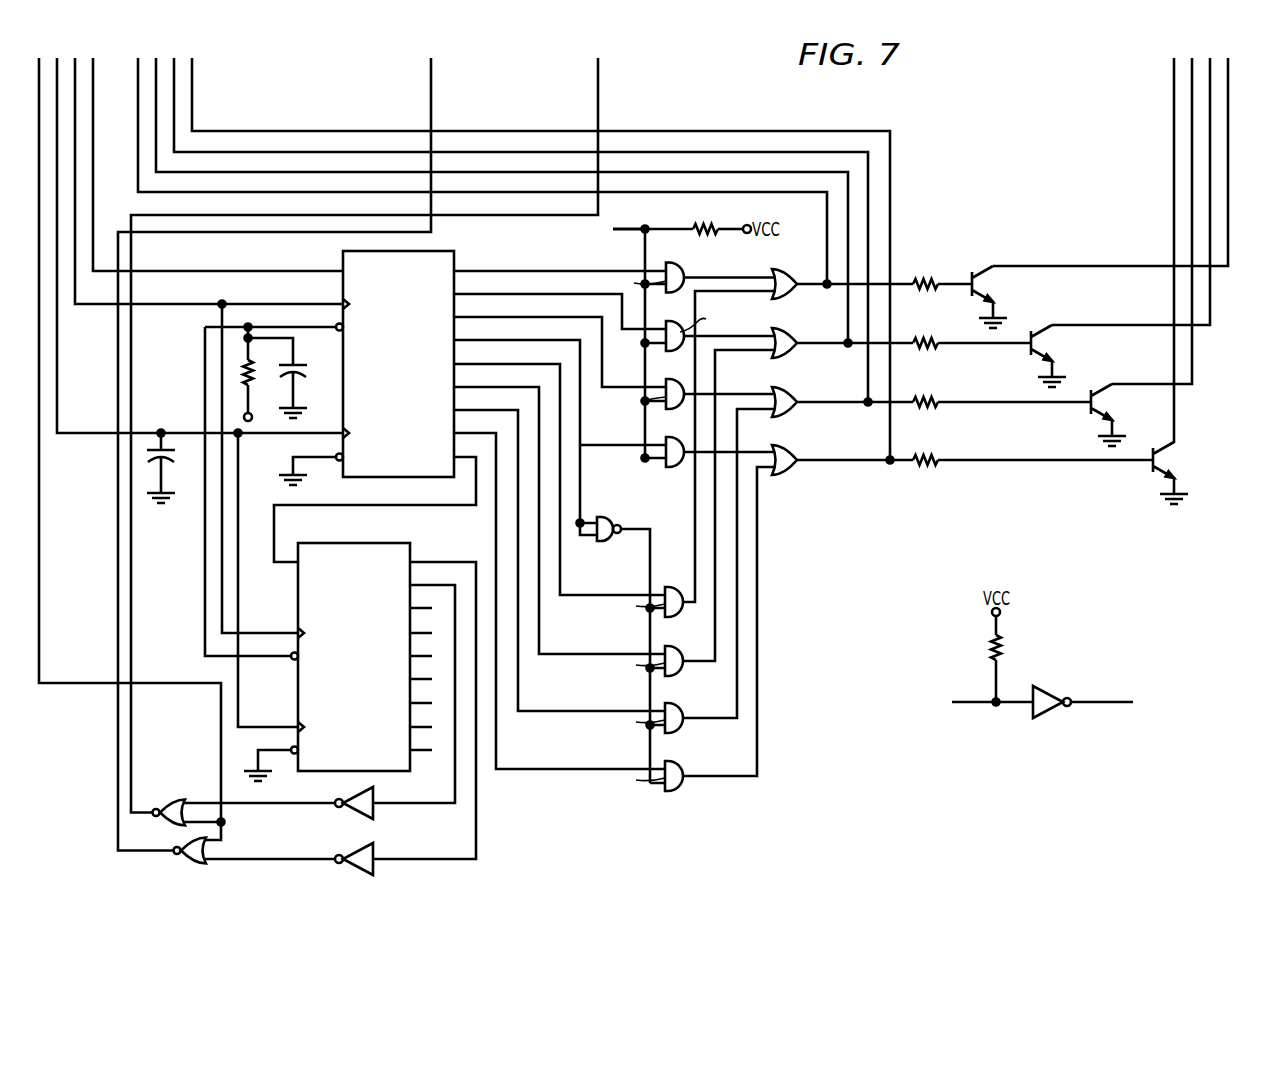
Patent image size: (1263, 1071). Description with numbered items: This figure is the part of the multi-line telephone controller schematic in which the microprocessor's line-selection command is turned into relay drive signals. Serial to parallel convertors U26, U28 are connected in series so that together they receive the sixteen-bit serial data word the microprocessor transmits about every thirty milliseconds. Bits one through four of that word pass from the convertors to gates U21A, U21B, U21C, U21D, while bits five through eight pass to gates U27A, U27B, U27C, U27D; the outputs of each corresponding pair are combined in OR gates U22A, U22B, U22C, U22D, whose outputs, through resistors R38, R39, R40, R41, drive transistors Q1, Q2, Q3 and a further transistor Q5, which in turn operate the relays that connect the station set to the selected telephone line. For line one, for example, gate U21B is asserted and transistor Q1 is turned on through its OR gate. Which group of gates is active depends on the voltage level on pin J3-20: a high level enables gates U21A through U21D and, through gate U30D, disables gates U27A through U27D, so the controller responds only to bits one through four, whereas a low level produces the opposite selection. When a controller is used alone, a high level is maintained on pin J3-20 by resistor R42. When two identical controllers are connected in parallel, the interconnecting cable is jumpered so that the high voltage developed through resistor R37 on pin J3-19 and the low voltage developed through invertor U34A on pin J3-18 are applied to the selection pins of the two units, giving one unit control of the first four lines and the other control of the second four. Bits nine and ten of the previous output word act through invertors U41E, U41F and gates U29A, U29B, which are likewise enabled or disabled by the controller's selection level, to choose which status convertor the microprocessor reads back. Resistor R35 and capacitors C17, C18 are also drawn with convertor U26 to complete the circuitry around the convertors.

The serial to parallel convertor U26 is at (454, 250).
The serial to parallel convertor U28 is at (380, 543).
The gate U21A is at (706, 326).
The gate U21B is at (633, 267).
The gate U21C is at (638, 390).
The gate U21D is at (659, 454).
The OR gate U22A is at (810, 281).
The OR gate U22B is at (812, 339).
The OR gate U22C is at (812, 398).
The OR gate U22D is at (808, 459).
The gate U27A is at (635, 590).
The gate U27B is at (635, 650).
The gate U27C is at (635, 707).
The gate U27D is at (635, 766).
The gate U30D is at (619, 638).
The gate U29A is at (198, 864).
The gate U29B is at (157, 814).
The invertor U41E is at (376, 803).
The invertor U41F is at (376, 856).
The invertor U34A is at (1069, 700).
The 47K resistor R35 is at (261, 374).
The resistor R37 is at (996, 647).
The 2.0K resistor R38 is at (924, 286).
The 2.0K resistor R39 is at (924, 346).
The 2.0K resistor R40 is at (924, 404).
The 2.0K resistor R41 is at (924, 463).
The resistor R42 is at (685, 229).
The .33uf capacitor C17 is at (294, 378).
The capacitor C18 is at (169, 467).
The transistor Q1 is at (1018, 297).
The transistor Q2 is at (1076, 356).
The transistor Q3 is at (1081, 415).
The 2SD1048 transistor Q5 is at (1200, 473).
The pin J3-20 is at (603, 230).
The pin J3-19 is at (969, 703).
The pin J3-18 is at (1125, 703).